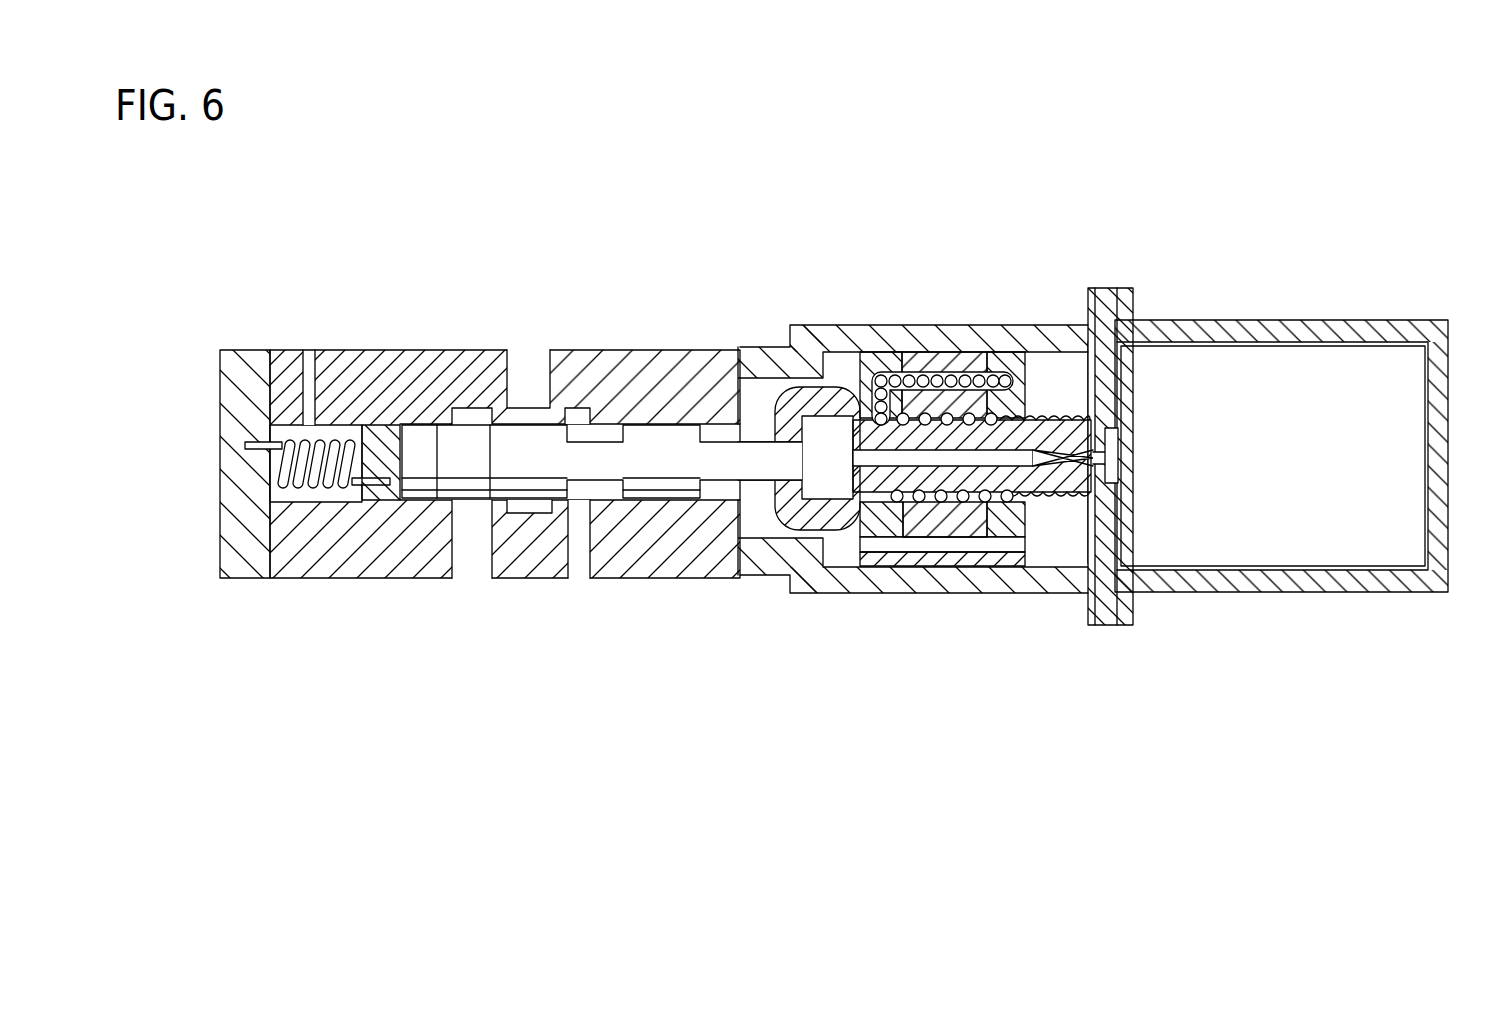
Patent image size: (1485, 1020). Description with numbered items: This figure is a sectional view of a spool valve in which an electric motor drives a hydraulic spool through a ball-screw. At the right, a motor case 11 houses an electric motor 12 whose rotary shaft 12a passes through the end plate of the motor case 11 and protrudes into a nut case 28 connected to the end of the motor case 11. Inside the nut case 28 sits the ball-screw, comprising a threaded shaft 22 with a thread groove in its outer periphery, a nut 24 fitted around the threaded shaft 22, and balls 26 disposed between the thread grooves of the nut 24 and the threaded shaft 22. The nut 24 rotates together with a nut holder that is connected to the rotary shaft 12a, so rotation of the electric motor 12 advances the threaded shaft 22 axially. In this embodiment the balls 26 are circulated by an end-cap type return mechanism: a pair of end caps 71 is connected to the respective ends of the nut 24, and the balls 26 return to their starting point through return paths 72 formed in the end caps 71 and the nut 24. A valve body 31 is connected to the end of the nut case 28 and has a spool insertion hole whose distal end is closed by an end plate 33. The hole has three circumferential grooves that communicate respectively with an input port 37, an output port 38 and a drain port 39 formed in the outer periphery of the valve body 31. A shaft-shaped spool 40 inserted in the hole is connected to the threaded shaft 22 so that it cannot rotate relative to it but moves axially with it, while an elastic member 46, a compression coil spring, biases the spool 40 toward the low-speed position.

The motor case 11 is at (1330, 325).
The electric motor 12 is at (1258, 358).
The rotary shaft 12a is at (1093, 455).
The threaded shaft 22 is at (1094, 418).
The nut 24 is at (943, 352).
The balls 26 is at (982, 374).
The nut case 28 is at (767, 348).
The valve body 31 is at (355, 346).
The end plate 33 is at (247, 352).
The input port 37 is at (580, 565).
The output port 38 is at (527, 368).
The drain port 39 is at (471, 565).
The spool 40 is at (422, 420).
The elastic member 46 is at (272, 463).
The end caps 71 is at (880, 352).
The return paths 72 is at (918, 352).